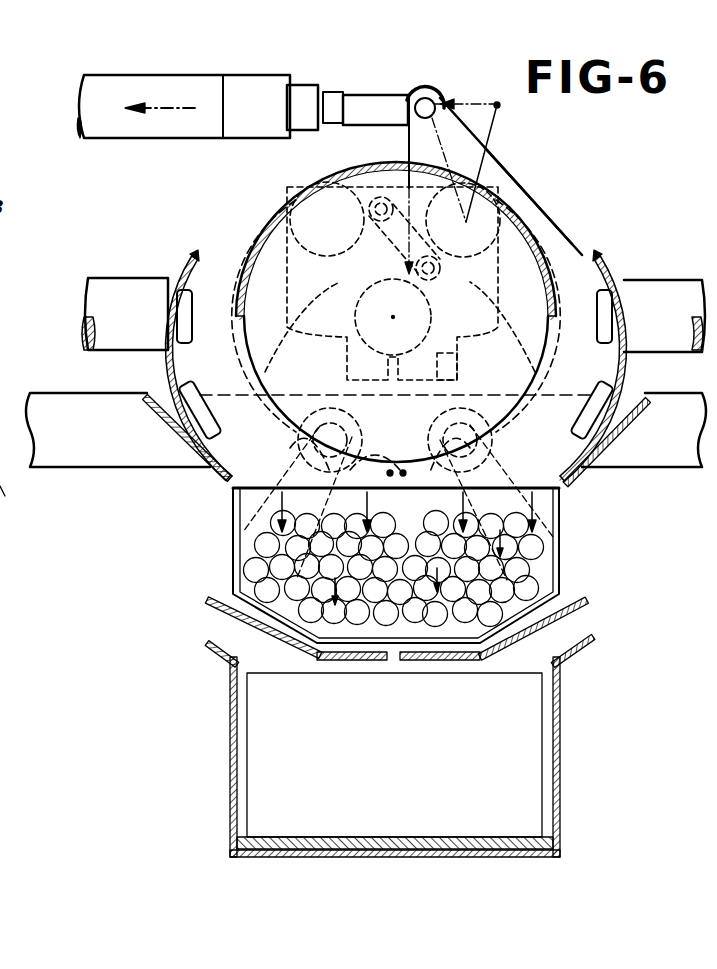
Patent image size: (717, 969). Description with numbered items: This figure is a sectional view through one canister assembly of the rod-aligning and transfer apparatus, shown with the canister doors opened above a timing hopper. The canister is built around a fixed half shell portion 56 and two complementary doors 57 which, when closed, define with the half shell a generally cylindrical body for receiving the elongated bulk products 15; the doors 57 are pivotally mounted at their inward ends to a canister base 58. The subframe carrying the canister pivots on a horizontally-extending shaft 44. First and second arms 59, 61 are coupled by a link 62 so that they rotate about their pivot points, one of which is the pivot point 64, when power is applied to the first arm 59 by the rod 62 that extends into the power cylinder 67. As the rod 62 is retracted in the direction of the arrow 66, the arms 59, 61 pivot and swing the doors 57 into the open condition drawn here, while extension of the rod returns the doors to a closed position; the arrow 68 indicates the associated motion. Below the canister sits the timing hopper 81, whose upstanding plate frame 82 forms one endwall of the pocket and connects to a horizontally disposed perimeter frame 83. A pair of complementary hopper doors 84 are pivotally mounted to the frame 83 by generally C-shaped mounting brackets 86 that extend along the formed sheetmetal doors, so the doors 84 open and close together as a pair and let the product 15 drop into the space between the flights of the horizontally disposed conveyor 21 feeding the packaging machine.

The bulk products 15 is at (425, 625).
The flight-equipped horizontally disposed conveyor 21 is at (247, 827).
The horizontally-extending shaft 44 is at (144, 280).
The fixed half shell portion 56 is at (537, 197).
The doors 57 is at (163, 360).
The canister base 58 is at (265, 366).
The first arm 59 is at (585, 247).
The second arm 61 is at (215, 255).
The rod 62 is at (400, 288).
The pivot point 64 is at (318, 210).
The arrow 66 is at (369, 97).
The power cylinder 67 is at (143, 133).
The retraction direction arrow 68 is at (175, 103).
The timing hoppers 81 is at (566, 530).
The upstanding plate frame 82 is at (399, 532).
The perimeter frame 83 is at (112, 462).
The hopper doors 84 is at (222, 678).
The C-shaped mounting brackets 86 is at (212, 586).